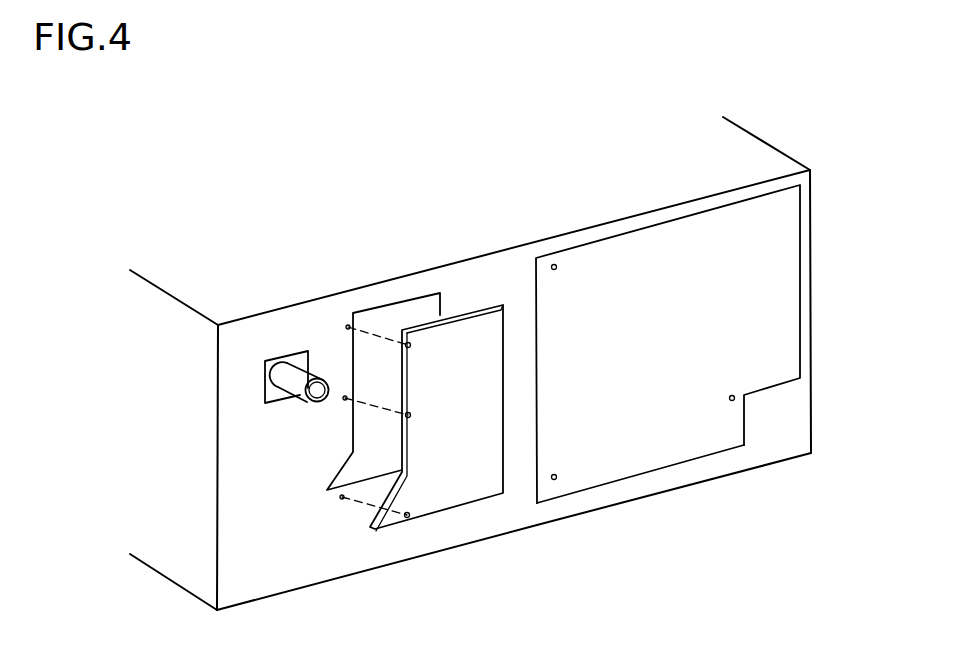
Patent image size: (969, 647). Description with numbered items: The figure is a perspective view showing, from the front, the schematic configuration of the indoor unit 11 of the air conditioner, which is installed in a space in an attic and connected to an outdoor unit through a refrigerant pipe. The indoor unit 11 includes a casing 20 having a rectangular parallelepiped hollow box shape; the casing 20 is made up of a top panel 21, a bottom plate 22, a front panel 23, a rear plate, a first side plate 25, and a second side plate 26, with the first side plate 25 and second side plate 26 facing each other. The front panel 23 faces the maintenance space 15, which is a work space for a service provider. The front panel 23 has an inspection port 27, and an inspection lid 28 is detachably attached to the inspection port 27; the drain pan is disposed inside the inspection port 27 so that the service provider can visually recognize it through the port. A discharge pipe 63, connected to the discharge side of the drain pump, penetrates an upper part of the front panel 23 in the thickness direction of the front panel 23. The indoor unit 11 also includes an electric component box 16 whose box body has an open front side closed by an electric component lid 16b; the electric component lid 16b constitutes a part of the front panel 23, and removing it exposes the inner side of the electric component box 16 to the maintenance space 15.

The indoor unit 11 is at (325, 145).
The maintenance space 15 is at (690, 590).
The electric component box 16 is at (577, 245).
The electric component lid 16b is at (625, 467).
The casing 20 is at (145, 228).
The top panel 21 is at (749, 150).
The bottom plate 22 is at (532, 528).
The front panel 23 is at (780, 452).
The first side plate 25 is at (812, 310).
The second side plate 26 is at (173, 568).
The inspection port 27 is at (392, 307).
The inspection lid 28 is at (452, 333).
The discharge pipe 63 is at (292, 398).